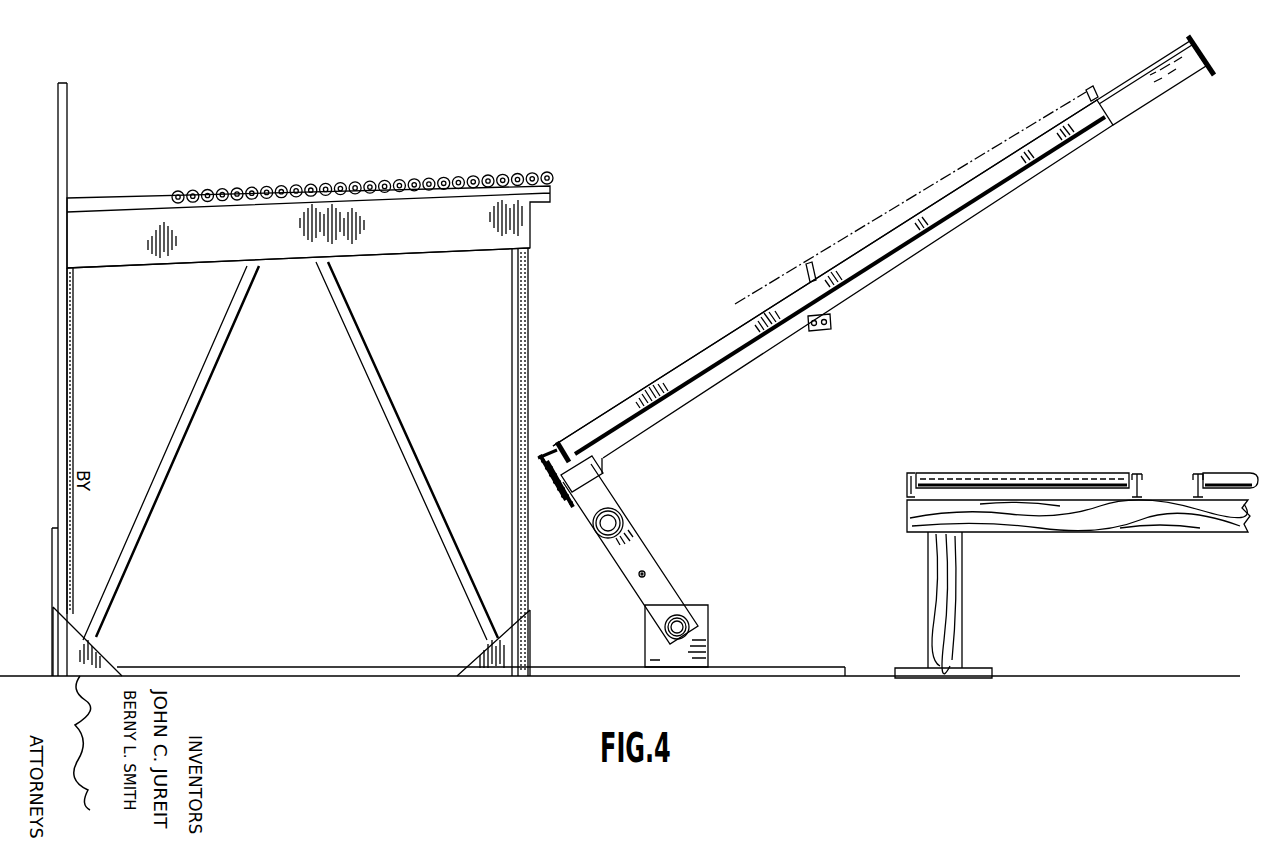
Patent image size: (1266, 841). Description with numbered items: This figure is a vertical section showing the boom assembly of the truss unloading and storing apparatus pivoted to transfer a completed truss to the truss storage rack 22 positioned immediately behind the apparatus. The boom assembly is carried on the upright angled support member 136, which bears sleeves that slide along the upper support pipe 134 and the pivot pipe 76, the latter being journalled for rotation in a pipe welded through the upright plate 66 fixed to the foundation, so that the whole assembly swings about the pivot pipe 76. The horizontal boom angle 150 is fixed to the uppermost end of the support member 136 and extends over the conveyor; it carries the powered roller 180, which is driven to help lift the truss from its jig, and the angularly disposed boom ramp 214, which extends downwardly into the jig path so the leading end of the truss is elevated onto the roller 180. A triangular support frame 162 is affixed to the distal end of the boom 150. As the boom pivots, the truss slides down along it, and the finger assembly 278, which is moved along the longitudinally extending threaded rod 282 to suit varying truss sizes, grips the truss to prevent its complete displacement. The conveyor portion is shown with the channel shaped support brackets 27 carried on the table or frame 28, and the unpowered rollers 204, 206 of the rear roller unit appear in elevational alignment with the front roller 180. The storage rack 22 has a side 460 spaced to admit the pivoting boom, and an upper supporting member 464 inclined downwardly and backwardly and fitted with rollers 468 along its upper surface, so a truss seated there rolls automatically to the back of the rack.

The truss storage rack 22 is at (292, 511).
The side of the storage rack 460 is at (452, 324).
The upper supporting member 464 is at (440, 231).
The rollers 468 is at (417, 178).
The horizontal boom angle 150 is at (684, 398).
The powered roller 180 is at (709, 347).
The front finger assembly 278 is at (840, 316).
The front boom ramp 214 is at (1146, 105).
The triangular support frame 162 is at (1210, 53).
The upright angled support member 136 is at (648, 550).
The upper support pipe 134 is at (621, 508).
The longitudinally extending rod 282 is at (637, 576).
The pivot pipe 76 is at (690, 610).
The upright plate 66 is at (710, 648).
The table or frame 28 is at (1041, 536).
The roller of rear roller unit 206 is at (1057, 473).
The roller of rear roller unit 204 is at (1238, 473).
The channel shaped support bracket 27 is at (907, 490).